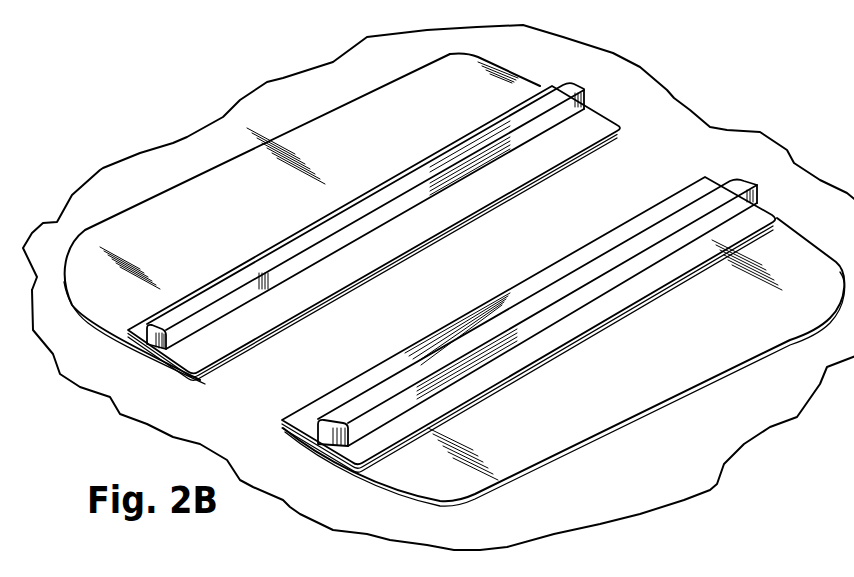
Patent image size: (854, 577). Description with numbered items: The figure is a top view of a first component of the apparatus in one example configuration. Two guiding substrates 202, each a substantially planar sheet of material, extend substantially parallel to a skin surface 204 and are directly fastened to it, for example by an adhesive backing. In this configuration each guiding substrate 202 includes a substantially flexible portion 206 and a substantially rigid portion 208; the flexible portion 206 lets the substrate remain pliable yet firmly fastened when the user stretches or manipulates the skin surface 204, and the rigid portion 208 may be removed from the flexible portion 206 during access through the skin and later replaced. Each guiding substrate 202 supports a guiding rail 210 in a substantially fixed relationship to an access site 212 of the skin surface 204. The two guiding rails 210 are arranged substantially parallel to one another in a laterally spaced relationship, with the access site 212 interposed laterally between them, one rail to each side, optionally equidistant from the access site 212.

The guiding substrate 202 is at (378, 142).
The skin surface 204 is at (682, 152).
The substantially flexible portion 206 is at (118, 284).
The substantially rigid portion 208 is at (217, 349).
The guiding rail 210 is at (310, 240).
The access site 212 is at (495, 272).